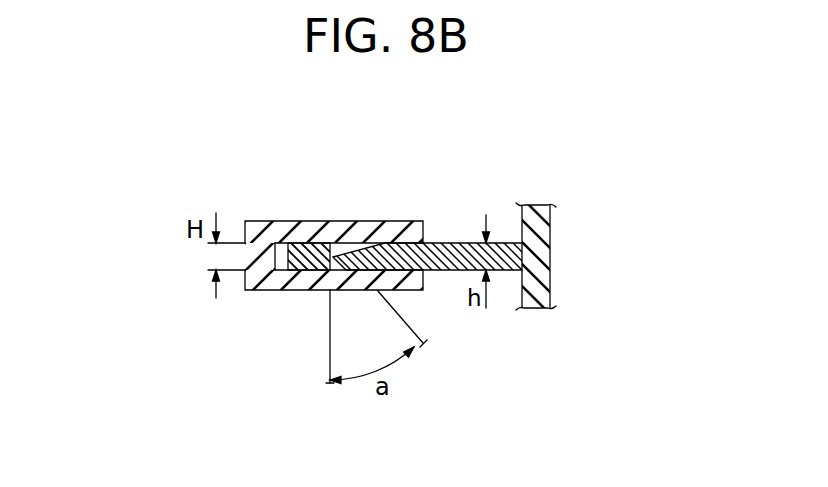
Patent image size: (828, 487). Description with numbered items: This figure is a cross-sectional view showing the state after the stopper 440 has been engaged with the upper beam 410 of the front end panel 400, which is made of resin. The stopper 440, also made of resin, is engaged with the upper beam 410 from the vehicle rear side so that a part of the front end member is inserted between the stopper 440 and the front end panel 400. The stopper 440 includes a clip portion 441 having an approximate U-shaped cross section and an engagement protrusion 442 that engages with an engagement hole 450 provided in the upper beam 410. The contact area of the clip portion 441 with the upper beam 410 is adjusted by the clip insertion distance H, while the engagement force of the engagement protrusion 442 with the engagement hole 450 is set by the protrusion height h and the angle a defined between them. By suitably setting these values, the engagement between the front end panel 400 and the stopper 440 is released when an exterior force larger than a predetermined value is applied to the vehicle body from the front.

The stopper 440 is at (352, 256).
The clip portion 441 is at (272, 221).
The engagement protrusion 442 is at (402, 290).
The engagement hole 450 is at (316, 272).
The upper beam 410 is at (443, 243).
The front end panel 400 is at (469, 232).